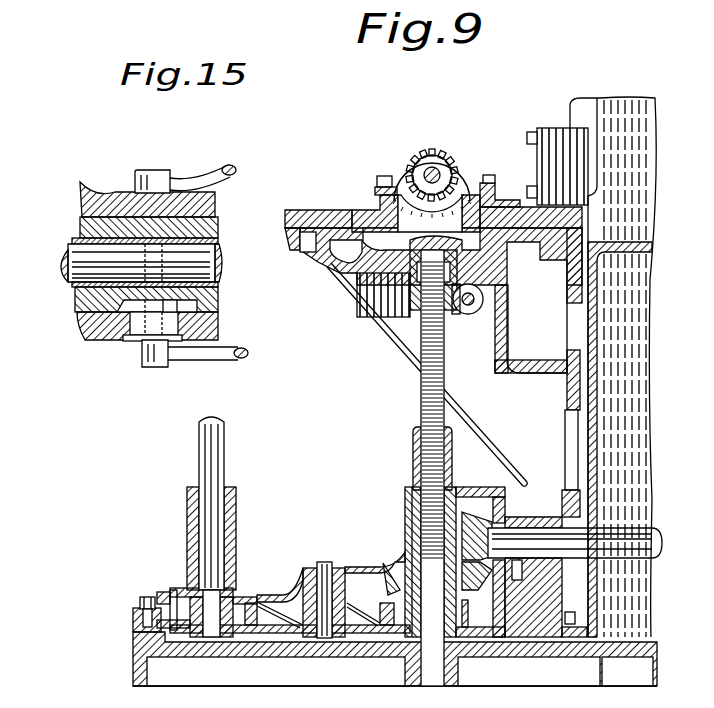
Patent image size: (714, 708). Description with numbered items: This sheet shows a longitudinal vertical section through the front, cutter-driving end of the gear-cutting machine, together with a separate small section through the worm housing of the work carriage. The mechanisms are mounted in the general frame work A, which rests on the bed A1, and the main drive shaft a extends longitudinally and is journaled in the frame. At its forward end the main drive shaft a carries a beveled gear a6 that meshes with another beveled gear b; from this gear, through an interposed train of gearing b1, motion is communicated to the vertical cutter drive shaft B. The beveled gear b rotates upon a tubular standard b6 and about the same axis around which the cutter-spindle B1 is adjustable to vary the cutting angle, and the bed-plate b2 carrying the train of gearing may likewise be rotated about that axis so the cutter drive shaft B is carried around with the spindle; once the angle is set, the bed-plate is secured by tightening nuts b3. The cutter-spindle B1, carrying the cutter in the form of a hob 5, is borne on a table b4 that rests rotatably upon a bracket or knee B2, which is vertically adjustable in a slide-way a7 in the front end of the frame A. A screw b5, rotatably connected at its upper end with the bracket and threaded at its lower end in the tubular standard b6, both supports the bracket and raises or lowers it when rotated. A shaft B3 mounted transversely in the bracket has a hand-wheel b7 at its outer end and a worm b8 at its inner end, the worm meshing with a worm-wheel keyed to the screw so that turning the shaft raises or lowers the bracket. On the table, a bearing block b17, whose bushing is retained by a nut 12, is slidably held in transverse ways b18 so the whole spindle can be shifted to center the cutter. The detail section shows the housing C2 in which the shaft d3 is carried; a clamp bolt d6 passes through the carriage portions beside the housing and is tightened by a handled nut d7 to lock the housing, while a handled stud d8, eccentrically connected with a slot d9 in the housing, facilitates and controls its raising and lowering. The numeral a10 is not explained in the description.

In FIG. 9, the frame work A is at (635, 340).
In FIG. 9, the bed A1 is at (375, 686).
In FIG. 9, the main drive shaft a is at (660, 552).
In FIG. 9, the beveled gear a6 is at (468, 487).
In FIG. 9, the slide-way a7 is at (575, 427).
In FIG. 9, the base foot a10 is at (511, 700).
In FIG. 9, the nut 12 is at (472, 700).
In FIG. 9, the vertical cutter drive shaft B is at (216, 456).
In FIG. 9, the cutter-spindle B1 is at (436, 170).
In FIG. 9, the bracket or knee B2 is at (403, 322).
In FIG. 9, the shaft B3 is at (486, 292).
In FIG. 9, the beveled gear b is at (374, 562).
In FIG. 9, the train of gearing b1 is at (262, 597).
In FIG. 9, the bed-plate b2 is at (276, 635).
In FIG. 9, the nuts b3 is at (150, 585).
In FIG. 9, the table b4 is at (330, 212).
In FIG. 9, the screw b5 is at (421, 402).
In FIG. 9, the tubular standard b6 is at (413, 465).
In FIG. 9, the hand-wheel b7 is at (412, 293).
In FIG. 9, the worm b8 is at (478, 310).
In FIG. 9, the bearing block b17 is at (400, 176).
In FIG. 9, the transverse ways b18 is at (505, 192).
In FIG. 9, the hob 5 is at (458, 182).
In FIG. 15, the housing C2 is at (72, 306).
In FIG. 15, the shaft d3 is at (62, 252).
In FIG. 15, the clamp bolt d6 is at (216, 208).
In FIG. 15, the handled nut d7 is at (228, 164).
In FIG. 15, the handled stud d8 is at (250, 338).
In FIG. 15, the slot d9 is at (196, 300).